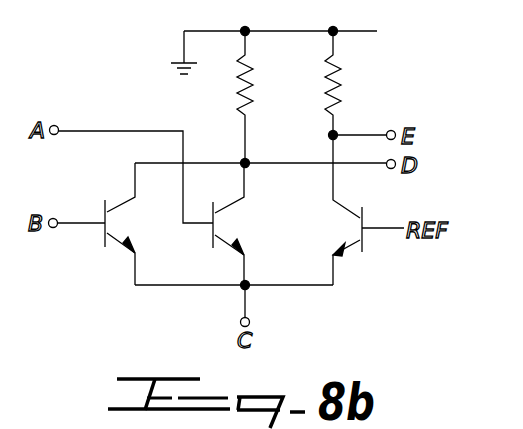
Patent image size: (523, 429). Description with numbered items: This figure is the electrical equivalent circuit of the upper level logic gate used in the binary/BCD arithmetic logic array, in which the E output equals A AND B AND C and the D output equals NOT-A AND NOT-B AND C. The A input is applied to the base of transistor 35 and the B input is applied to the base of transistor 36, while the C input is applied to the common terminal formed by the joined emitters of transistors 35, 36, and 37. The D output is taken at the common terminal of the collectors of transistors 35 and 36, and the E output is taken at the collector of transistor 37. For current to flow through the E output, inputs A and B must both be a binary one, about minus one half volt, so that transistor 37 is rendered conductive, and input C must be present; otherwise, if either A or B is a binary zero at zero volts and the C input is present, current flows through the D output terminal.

The transistor 35 is at (226, 236).
The transistor 36 is at (116, 232).
The transistor 37 is at (352, 243).